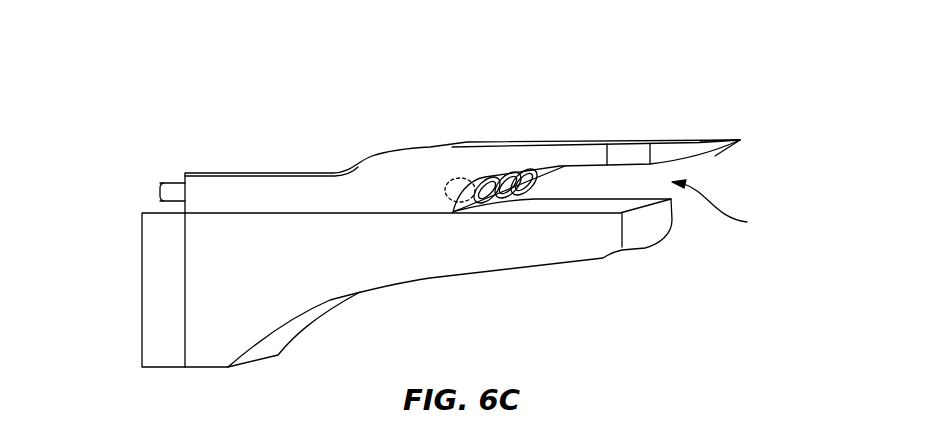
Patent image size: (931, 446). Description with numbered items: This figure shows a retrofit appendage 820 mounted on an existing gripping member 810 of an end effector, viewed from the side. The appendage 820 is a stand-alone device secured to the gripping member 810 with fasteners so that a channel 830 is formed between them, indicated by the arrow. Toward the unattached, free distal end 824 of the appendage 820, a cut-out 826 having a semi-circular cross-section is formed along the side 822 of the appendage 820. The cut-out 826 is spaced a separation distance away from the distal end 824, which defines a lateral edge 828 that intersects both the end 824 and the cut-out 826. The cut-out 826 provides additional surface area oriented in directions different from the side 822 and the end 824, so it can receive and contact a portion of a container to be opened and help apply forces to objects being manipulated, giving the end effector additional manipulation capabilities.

The gripping member 810 is at (605, 254).
The appendage 820 is at (479, 144).
The side 822 is at (570, 153).
The distal end 824 is at (707, 143).
The cut-out 826 is at (623, 157).
The lateral edge 828 is at (667, 152).
The channel 830 is at (728, 208).